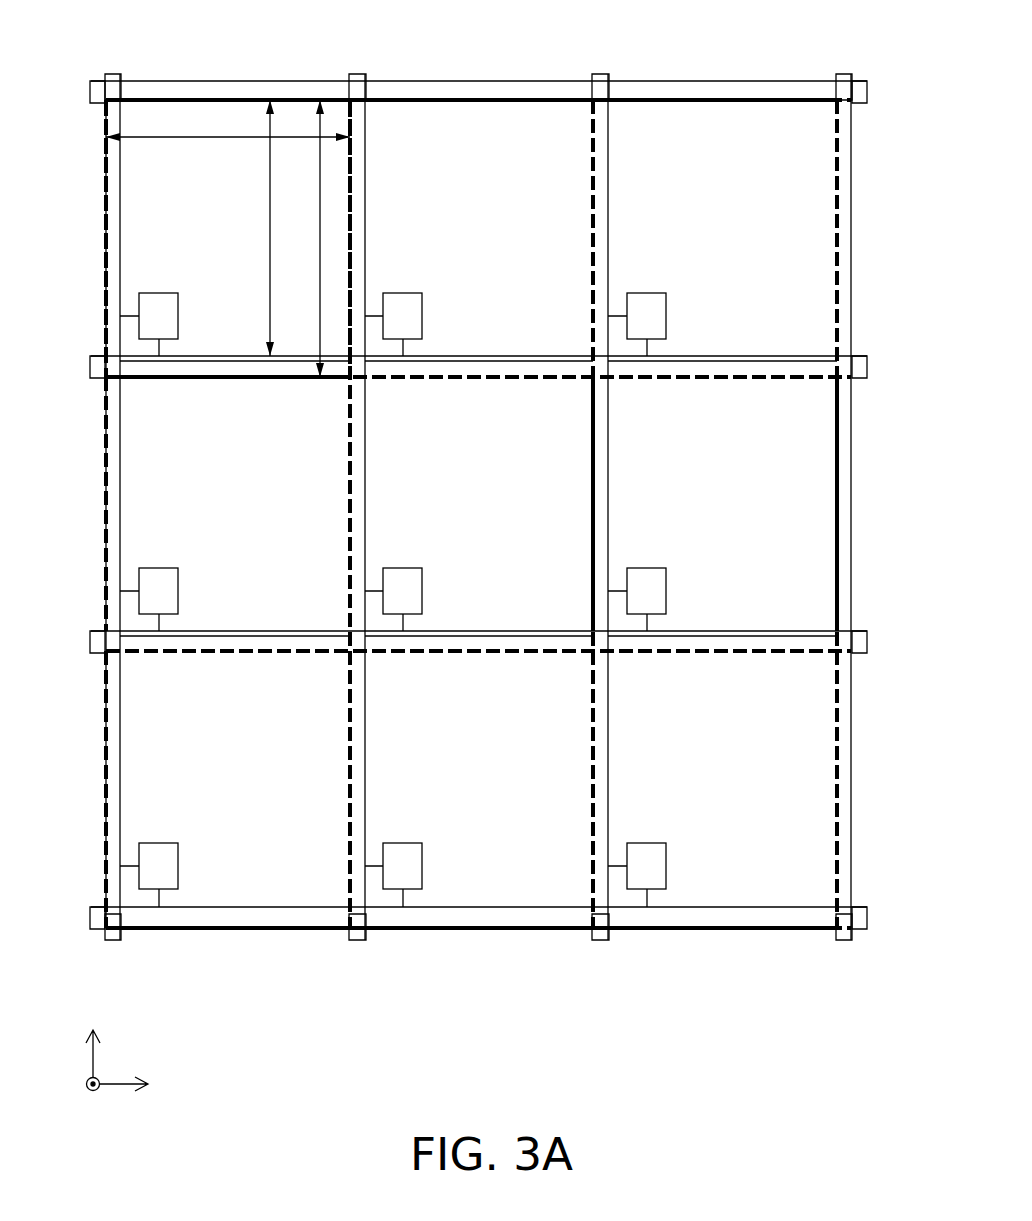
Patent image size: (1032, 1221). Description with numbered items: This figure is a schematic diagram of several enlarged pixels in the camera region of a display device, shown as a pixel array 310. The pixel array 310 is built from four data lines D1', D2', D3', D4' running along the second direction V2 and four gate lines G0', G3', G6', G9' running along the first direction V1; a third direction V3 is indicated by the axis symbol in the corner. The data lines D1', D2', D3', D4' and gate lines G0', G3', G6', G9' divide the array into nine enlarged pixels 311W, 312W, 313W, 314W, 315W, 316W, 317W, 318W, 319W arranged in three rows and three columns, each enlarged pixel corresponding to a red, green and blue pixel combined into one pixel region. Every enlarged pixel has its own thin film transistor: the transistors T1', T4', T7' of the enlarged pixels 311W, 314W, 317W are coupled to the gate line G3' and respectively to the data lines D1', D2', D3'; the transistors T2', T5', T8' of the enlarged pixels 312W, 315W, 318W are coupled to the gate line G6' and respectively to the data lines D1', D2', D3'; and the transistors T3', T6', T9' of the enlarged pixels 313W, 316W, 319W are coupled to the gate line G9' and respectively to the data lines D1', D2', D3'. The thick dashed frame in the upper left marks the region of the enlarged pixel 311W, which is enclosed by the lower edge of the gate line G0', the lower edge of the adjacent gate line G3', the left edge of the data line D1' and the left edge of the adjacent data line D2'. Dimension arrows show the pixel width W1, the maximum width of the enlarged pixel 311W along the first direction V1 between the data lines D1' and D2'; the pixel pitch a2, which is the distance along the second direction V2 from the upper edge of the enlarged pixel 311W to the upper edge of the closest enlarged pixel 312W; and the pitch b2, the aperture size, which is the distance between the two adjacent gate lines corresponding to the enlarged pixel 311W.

The pixel array 310 is at (891, 1041).
The enlarged pixel 311W is at (104, 240).
The enlarged pixel 312W is at (104, 515).
The enlarged pixel 313W is at (104, 790).
The enlarged pixel 314W is at (479, 98).
The enlarged pixel 315W is at (593, 438).
The enlarged pixel 316W is at (483, 930).
The enlarged pixel 317W is at (851, 241).
The enlarged pixel 318W is at (851, 516).
The enlarged pixel 319W is at (851, 791).
The data line D1' is at (117, 470).
The data line D2' is at (362, 470).
The data line D3' is at (605, 470).
The data line D4' is at (848, 470).
The gate line G0' is at (445, 92).
The gate line G3' is at (444, 366).
The gate line G6' is at (444, 641).
The gate line G9' is at (444, 917).
The thin film transistor T1' is at (164, 303).
The thin film transistor T2' is at (164, 578).
The thin film transistor T3' is at (164, 854).
The thin film transistor T4' is at (408, 303).
The thin film transistor T5' is at (408, 578).
The thin film transistor T6' is at (408, 854).
The thin film transistor T7' is at (652, 303).
The thin film transistor T8' is at (652, 578).
The thin film transistor T9' is at (652, 854).
The pixel width W1 is at (228, 152).
The pixel pitch a2 is at (305, 238).
The pitch (aperture size) b2 is at (256, 228).
The first direction V1 is at (141, 1086).
The second direction V2 is at (92, 1035).
The third direction V3 is at (76, 1097).